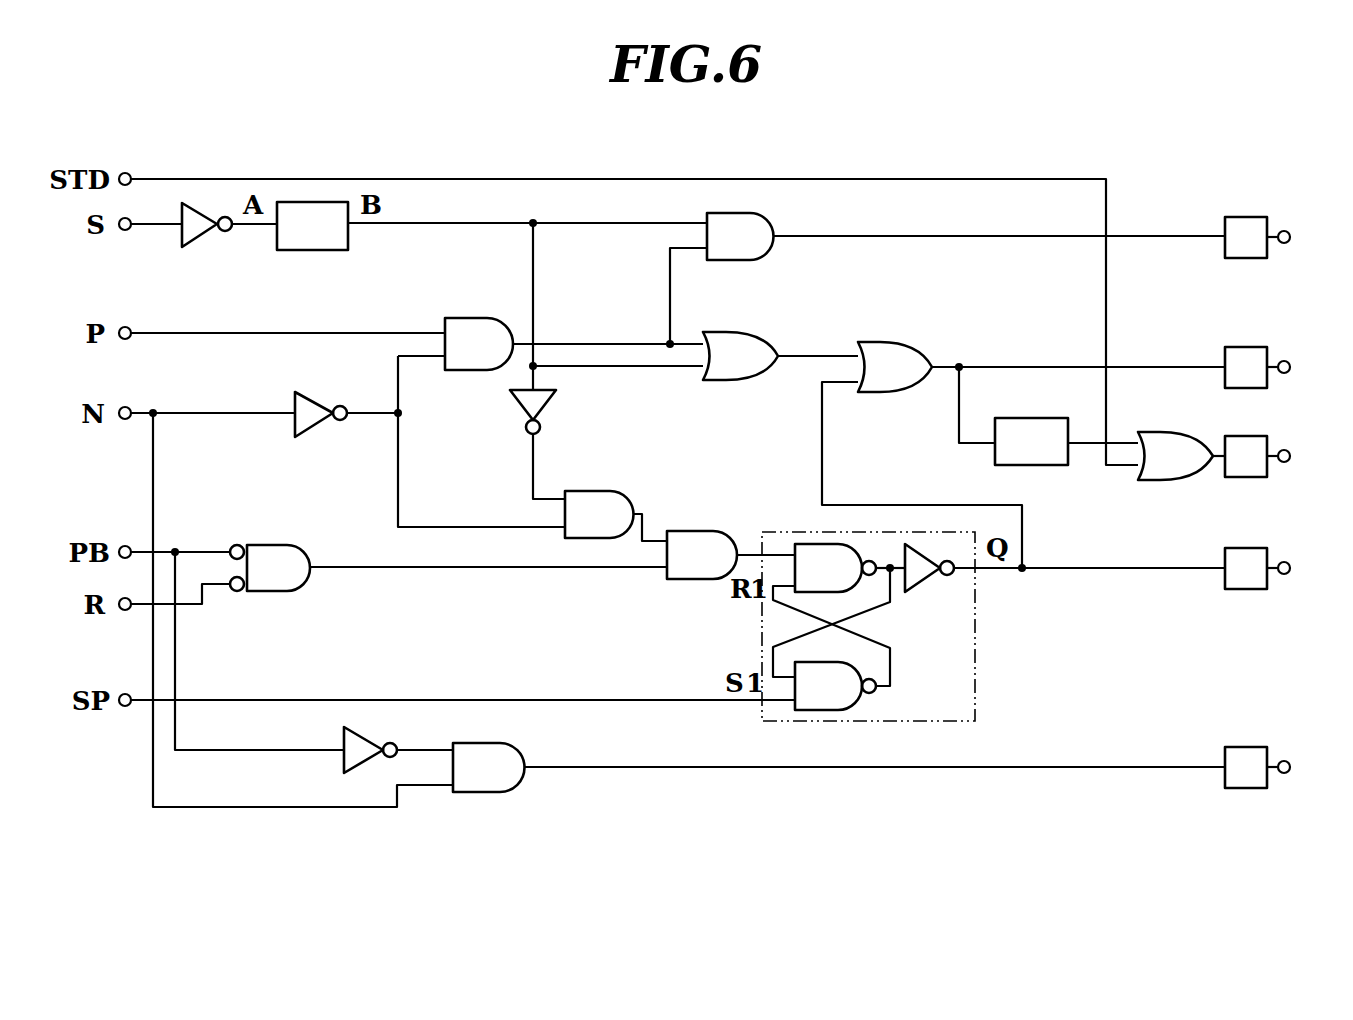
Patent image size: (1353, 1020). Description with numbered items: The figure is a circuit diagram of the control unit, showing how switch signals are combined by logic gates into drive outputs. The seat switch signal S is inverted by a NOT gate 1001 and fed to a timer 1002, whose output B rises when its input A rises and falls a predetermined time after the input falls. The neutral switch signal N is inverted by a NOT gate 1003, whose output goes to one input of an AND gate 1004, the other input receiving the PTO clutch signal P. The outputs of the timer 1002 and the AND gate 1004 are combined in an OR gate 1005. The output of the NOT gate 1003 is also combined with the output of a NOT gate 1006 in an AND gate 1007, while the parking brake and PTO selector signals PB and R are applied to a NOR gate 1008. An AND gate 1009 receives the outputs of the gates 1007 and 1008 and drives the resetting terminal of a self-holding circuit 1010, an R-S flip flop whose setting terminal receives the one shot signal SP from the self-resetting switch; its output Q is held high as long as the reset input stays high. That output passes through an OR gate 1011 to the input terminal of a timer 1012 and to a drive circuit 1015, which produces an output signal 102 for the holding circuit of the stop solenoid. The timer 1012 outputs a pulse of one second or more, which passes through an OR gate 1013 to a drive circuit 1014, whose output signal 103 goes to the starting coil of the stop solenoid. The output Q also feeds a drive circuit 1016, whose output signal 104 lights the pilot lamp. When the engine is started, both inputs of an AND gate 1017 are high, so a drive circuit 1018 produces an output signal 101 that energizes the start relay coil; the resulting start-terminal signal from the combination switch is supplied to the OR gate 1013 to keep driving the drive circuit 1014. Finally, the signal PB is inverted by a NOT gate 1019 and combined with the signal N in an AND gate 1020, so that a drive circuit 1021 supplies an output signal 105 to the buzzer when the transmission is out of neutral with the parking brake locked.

The NOT gate 1001 is at (205, 238).
The timer (T1) 1002 is at (348, 250).
The NOT gate 1003 is at (320, 400).
The AND gate 1004 is at (468, 318).
The OR gate 1005 is at (730, 332).
The NOT gate 1006 is at (512, 400).
The AND gate 1007 is at (588, 491).
The NOR gate 1008 is at (266, 545).
The AND gate 1009 is at (700, 531).
The self-holding circuit 1010 is at (975, 668).
The OR gate 1011 is at (882, 342).
The timer (T2) 1012 is at (1008, 418).
The OR gate 1013 is at (1152, 432).
The drive circuit (DR) 1014 is at (1255, 436).
The drive circuit (DR) 1015 is at (1246, 347).
The drive circuit (DR) 1016 is at (1243, 548).
The AND gate 1017 is at (760, 256).
The drive circuit (DR) 1018 is at (1246, 217).
The NOT gate 1019 is at (366, 742).
The AND gate 1020 is at (508, 745).
The drive circuit (DR) 1021 is at (1243, 747).
The output signal 101 is at (1325, 238).
The output signal 102 is at (1325, 368).
The output signal 103 is at (1325, 457).
The output signal 104 is at (1325, 569).
The output signal 105 is at (1325, 768).